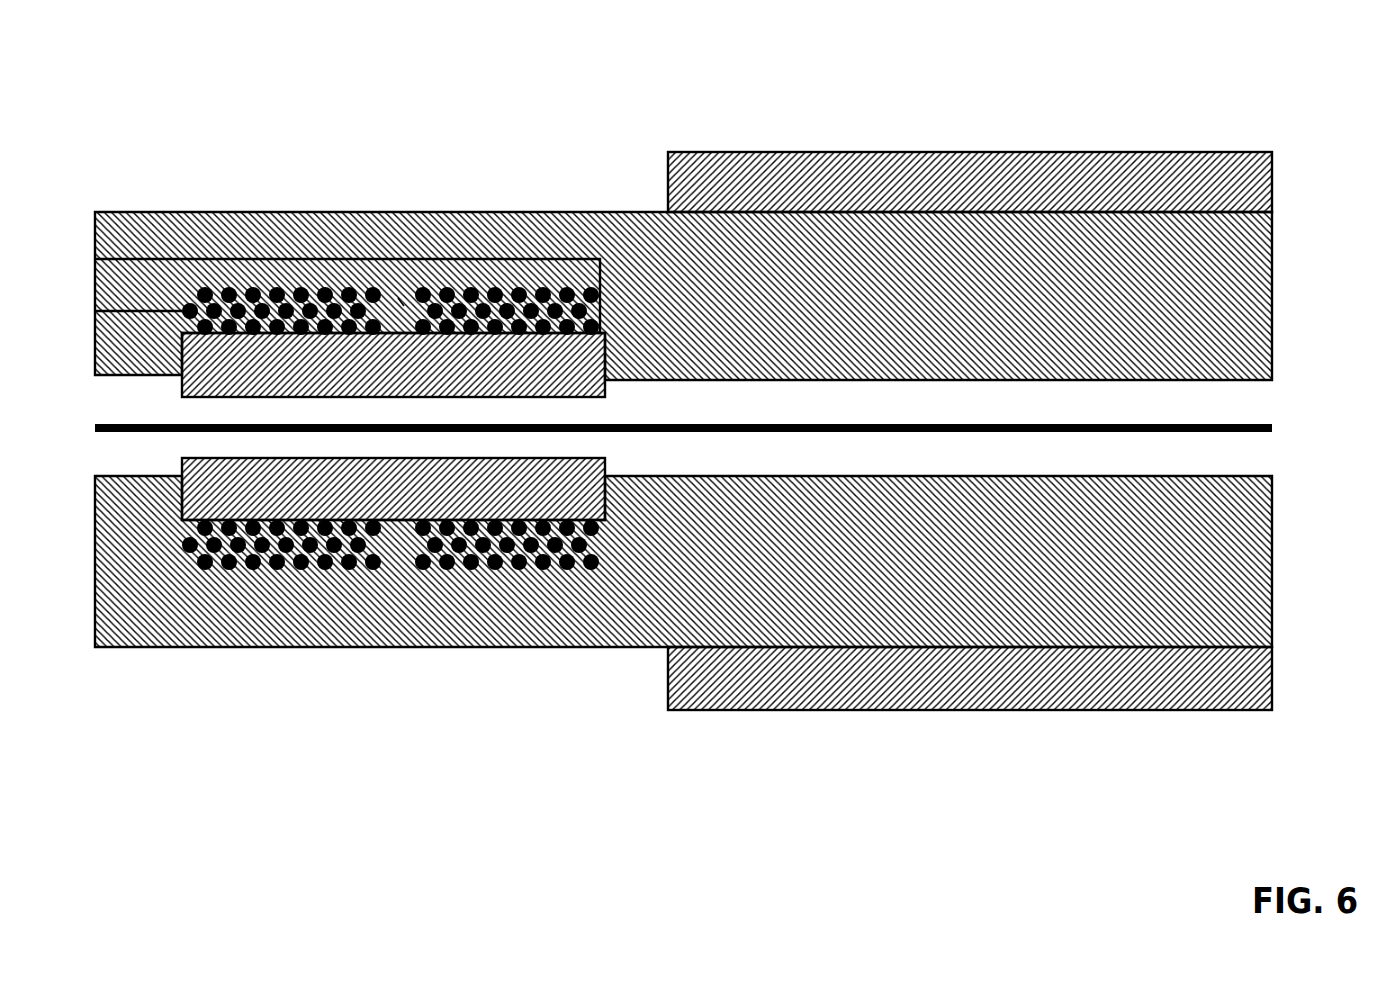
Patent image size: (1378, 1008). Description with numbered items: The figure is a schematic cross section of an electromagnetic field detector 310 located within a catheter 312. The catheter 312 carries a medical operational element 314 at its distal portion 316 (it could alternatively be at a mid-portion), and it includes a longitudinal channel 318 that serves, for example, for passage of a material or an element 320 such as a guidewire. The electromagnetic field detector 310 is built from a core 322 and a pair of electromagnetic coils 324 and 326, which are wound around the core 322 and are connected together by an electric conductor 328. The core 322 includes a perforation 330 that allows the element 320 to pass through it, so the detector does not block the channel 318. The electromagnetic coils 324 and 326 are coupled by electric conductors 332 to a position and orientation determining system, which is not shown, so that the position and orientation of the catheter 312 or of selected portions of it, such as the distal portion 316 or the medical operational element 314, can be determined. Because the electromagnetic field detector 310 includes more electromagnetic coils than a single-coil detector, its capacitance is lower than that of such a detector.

The electromagnetic field detector 310 is at (719, 397).
The catheter 312 is at (1272, 248).
The medical operational element 314 is at (1200, 152).
The distal portion 316 is at (722, 385).
The longitudinal channel 318 is at (1233, 408).
The element 320 is at (1240, 433).
The core 322 is at (212, 492).
The electromagnetic coil 324 is at (520, 295).
The electromagnetic coil 326 is at (274, 290).
The electric conductor 328 is at (398, 298).
The perforation 330 is at (405, 443).
The electric conductors 332 is at (121, 311).